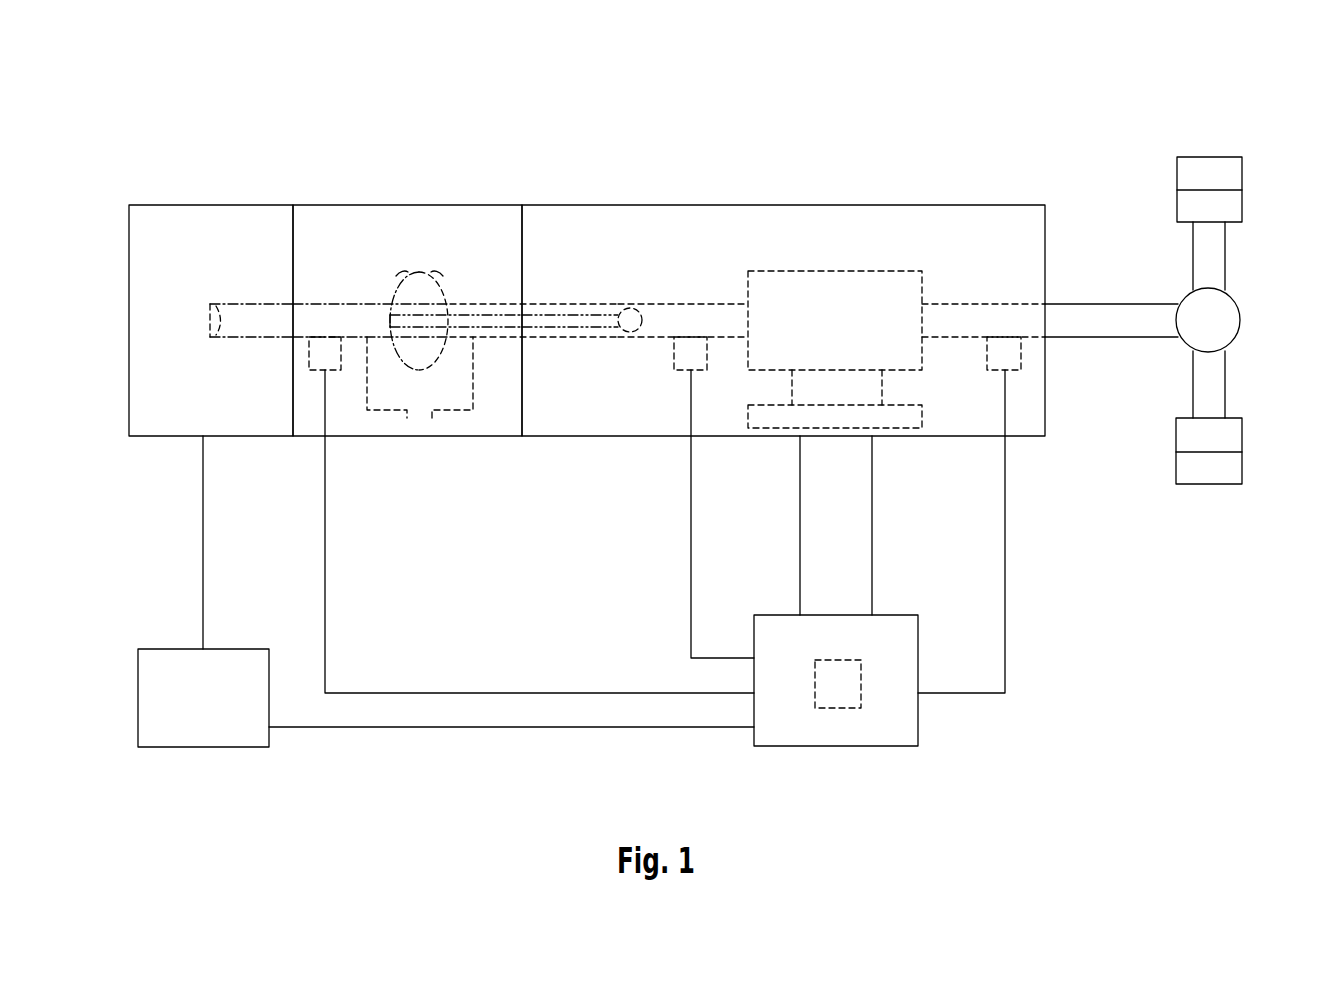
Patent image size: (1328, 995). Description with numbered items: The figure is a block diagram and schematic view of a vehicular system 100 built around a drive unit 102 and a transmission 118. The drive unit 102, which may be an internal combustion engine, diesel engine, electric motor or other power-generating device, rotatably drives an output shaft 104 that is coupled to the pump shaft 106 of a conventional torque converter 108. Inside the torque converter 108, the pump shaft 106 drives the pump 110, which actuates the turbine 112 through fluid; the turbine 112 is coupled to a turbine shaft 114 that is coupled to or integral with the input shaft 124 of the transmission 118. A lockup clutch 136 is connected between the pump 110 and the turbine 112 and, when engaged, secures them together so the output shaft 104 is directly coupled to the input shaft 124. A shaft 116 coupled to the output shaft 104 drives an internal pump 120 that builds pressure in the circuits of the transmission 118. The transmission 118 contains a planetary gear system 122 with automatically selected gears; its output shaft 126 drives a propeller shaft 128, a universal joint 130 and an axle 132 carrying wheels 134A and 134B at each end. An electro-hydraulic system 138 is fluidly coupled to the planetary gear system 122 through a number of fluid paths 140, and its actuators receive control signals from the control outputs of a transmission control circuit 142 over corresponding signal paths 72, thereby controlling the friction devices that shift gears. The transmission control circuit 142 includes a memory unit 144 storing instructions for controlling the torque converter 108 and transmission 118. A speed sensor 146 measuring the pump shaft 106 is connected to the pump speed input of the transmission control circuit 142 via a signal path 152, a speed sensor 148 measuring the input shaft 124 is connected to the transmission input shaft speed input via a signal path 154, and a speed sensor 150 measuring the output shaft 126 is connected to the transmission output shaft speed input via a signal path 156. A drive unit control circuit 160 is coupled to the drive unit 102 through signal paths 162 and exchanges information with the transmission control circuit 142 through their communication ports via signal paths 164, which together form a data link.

The vehicular system 100 is at (170, 142).
The drive unit 102 is at (237, 205).
The output shaft 104 is at (248, 300).
The pump shaft 106 is at (335, 302).
The torque converter 108 is at (417, 205).
The pump 110 is at (398, 278).
The turbine 112 is at (440, 280).
The turbine shaft 114 is at (488, 303).
The shaft 116 is at (543, 322).
The transmission 118 is at (782, 205).
The internal pump 120 is at (631, 305).
The planetary gear system 122 is at (862, 335).
The input shaft 124 is at (703, 304).
The output shaft 126 is at (982, 303).
The propeller shaft 128 is at (1110, 304).
The universal joint 130 is at (1233, 343).
The axle 132 is at (1227, 260).
The wheel 134A is at (1208, 157).
The wheel 134B is at (1207, 484).
The lockup clutch 136 is at (433, 420).
The electro-hydraulic system 138 is at (882, 428).
The fluid paths 140 is at (1027, 465).
The transmission control circuit 142 is at (810, 746).
The memory unit 144 is at (847, 708).
The speed sensor 146 is at (308, 353).
The speed sensor 148 is at (685, 353).
The speed sensor 150 is at (1020, 353).
The signal path 152 is at (477, 693).
The signal path 154 is at (691, 553).
The signal path 156 is at (1005, 583).
The drive unit control circuit 160 is at (197, 747).
The signal paths 162 is at (203, 483).
The signal paths 164 is at (430, 727).
The signal paths 72 is at (800, 488).